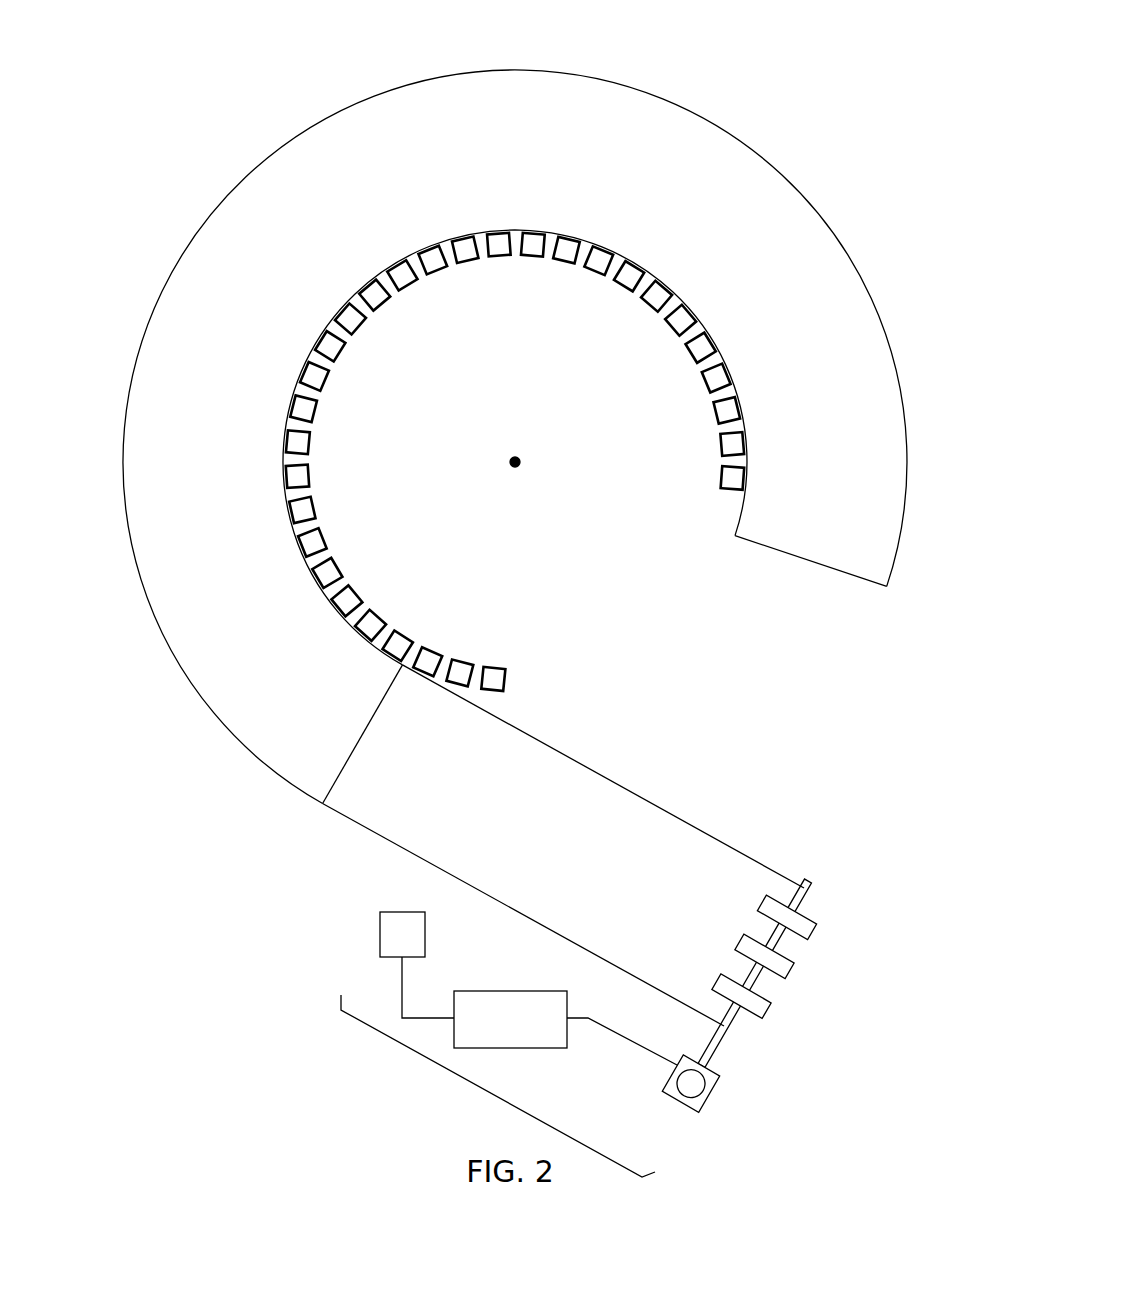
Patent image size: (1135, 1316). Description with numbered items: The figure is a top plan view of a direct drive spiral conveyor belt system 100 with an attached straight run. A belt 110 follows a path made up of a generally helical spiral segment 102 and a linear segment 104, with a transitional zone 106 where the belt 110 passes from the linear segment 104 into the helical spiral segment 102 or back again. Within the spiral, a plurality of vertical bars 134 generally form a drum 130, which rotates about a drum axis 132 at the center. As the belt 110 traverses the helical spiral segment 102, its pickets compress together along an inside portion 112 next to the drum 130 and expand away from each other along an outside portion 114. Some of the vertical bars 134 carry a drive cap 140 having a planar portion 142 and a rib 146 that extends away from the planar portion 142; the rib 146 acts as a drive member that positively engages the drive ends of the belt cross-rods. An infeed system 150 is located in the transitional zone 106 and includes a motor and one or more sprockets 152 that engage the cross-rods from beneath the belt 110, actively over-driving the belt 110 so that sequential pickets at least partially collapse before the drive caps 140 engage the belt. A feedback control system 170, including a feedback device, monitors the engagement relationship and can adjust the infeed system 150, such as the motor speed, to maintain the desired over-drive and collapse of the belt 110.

The direct drive spiral conveyor belt system 100 is at (758, 98).
The helical spiral segment 102 is at (190, 731).
The linear segment 104 is at (710, 813).
The transitional zone 106 is at (319, 847).
The belt 110 is at (563, 845).
The inside portion 112 is at (298, 385).
The outside portion 114 is at (136, 558).
The drum 130 is at (529, 284).
The drum axis 132 is at (528, 483).
The vertical bar 134 is at (492, 667).
The drive cap 140 is at (510, 680).
The planar portion 142 is at (497, 691).
The rib 146 is at (491, 692).
The infeed system 150 is at (488, 1092).
The sprocket 152 is at (806, 909).
The feedback control system 170 is at (528, 988).